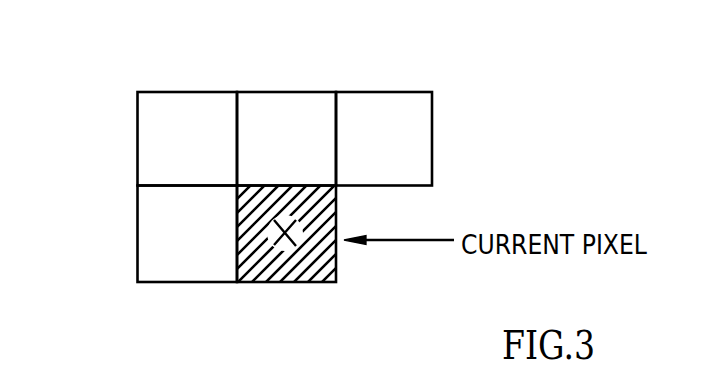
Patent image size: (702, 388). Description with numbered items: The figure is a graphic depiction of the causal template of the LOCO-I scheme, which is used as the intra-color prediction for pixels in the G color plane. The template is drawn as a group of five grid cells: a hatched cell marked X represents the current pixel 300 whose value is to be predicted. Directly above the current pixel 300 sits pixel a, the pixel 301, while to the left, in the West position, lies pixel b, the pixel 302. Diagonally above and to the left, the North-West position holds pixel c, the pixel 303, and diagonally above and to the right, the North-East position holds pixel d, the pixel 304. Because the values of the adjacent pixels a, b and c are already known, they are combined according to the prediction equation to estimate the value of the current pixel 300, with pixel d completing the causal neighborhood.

The current pixel 300 is at (287, 283).
The pixel a 301 is at (286, 100).
The pixel b 302 is at (146, 229).
The pixel c 303 is at (147, 127).
The pixel d 304 is at (379, 98).